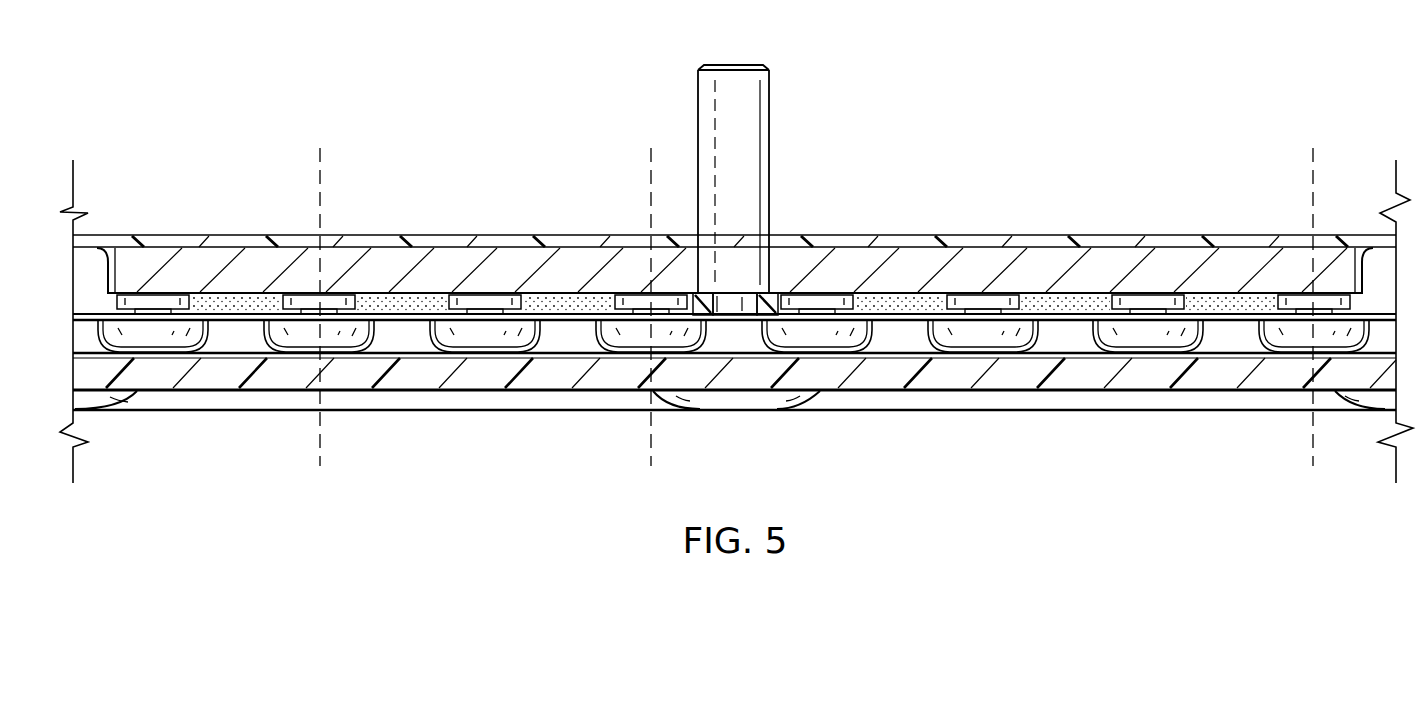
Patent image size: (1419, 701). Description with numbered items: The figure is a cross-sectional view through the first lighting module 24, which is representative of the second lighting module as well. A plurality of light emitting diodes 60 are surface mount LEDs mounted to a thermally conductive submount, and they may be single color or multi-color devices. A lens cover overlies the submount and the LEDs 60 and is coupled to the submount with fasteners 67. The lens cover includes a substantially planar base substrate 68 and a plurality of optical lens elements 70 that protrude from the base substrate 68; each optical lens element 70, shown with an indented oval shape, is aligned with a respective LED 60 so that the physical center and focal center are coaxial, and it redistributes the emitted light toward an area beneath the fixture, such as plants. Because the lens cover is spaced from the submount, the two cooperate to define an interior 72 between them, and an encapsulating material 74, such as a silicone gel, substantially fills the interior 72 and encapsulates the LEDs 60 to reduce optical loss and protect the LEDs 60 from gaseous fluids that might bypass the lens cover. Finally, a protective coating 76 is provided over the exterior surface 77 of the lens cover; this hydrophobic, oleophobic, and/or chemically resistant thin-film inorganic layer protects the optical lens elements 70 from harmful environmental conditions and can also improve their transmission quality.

The first lighting module 24 is at (1036, 64).
The fastener 67 is at (771, 128).
The light emitting diode 60 is at (300, 297).
The interior 72 is at (282, 299).
The encapsulating material 74 is at (213, 302).
The base substrate 68 is at (423, 318).
The optical lens element 70 is at (156, 364).
The protective coating 76 is at (212, 338).
The exterior surface 77 is at (178, 340).